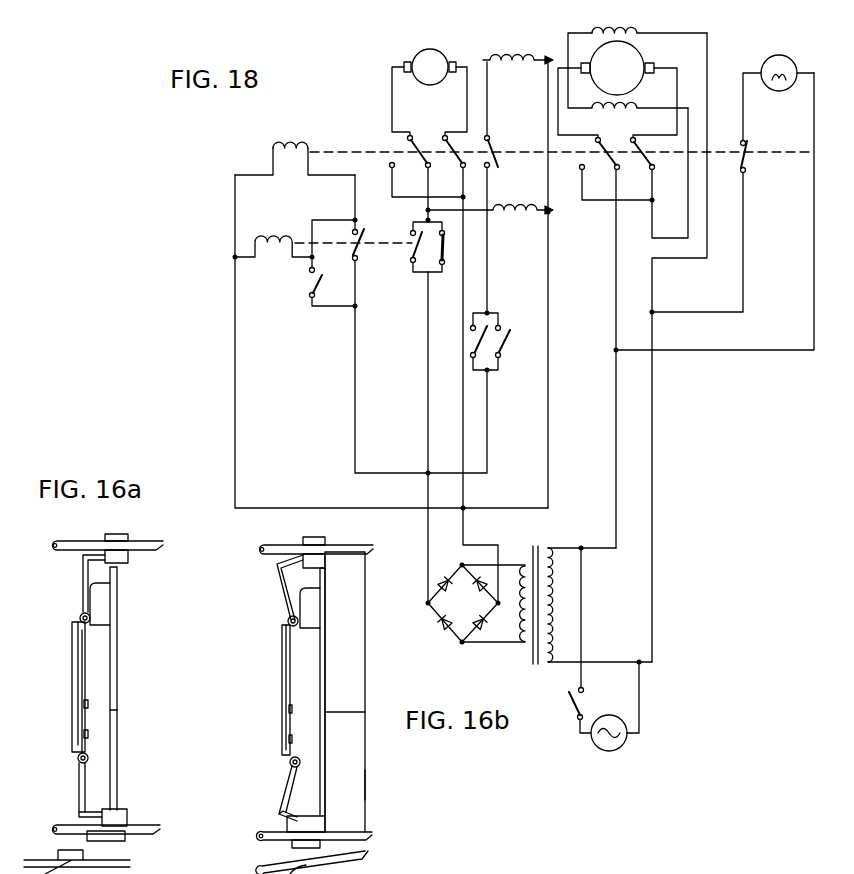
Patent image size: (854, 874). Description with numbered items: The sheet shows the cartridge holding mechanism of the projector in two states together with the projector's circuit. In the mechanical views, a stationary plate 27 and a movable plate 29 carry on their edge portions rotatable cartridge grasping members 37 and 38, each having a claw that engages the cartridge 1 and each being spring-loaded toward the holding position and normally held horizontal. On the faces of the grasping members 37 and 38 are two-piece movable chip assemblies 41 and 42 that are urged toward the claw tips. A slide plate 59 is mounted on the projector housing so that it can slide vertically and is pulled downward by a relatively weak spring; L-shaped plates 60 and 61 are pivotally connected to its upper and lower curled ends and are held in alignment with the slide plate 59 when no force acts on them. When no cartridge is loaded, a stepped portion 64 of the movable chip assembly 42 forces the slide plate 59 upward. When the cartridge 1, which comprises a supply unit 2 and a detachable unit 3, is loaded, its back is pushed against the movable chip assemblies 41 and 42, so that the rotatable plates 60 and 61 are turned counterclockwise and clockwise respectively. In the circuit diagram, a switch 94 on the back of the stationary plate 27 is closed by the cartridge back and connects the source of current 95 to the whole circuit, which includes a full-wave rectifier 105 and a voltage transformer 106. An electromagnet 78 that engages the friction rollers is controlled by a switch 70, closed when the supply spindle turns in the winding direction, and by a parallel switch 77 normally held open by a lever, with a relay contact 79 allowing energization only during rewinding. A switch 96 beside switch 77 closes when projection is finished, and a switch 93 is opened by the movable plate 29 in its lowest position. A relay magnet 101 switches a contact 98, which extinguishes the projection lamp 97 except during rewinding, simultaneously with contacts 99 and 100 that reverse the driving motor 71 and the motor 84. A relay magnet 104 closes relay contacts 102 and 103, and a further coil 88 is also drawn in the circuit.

In FIG. 18, the motor 84 is at (440, 56).
In FIG. 18, the electromagnet 78 is at (512, 58).
In FIG. 18, the driving motor 71 is at (650, 48).
In FIG. 18, the projection lamp 97 is at (778, 57).
In FIG. 18, the relay magnet 101 is at (292, 143).
In FIG. 18, the contact 100 is at (439, 152).
In FIG. 18, the relay contact 79 is at (503, 151).
In FIG. 18, the contact 99 is at (625, 154).
In FIG. 18, the contact 98 is at (747, 153).
In FIG. 18, the relay coil 88 is at (512, 203).
In FIG. 18, the relay magnet 104 is at (273, 241).
In FIG. 18, the relay contact 103 is at (338, 242).
In FIG. 18, the relay contact 102 is at (413, 234).
In FIG. 18, the switch 93 is at (447, 242).
In FIG. 18, the switch 96 is at (316, 276).
In FIG. 18, the switch 77 is at (487, 318).
In FIG. 18, the switch 70 is at (502, 355).
In FIG. 18, the full-wave rectifier 105 is at (447, 628).
In FIG. 18, the voltage transformer 106 is at (540, 548).
In FIG. 18, the switch 94 is at (588, 700).
In FIG. 16A, the switch 94 is at (75, 612).
In FIG. 16B, the switch 94 is at (288, 612).
In FIG. 18, the source of current 95 is at (610, 751).
In FIG. 16A, the movable chip assembly 41 is at (108, 534).
In FIG. 16B, the movable chip assembly 41 is at (315, 538).
In FIG. 16A, the cartridge grasping member 37 is at (145, 542).
In FIG. 16B, the cartridge grasping member 37 is at (350, 544).
In FIG. 16A, the L-shaped plate 60 is at (82, 579).
In FIG. 16B, the L-shaped plate 60 is at (279, 578).
In FIG. 16A, the stationary plate 27 is at (117, 633).
In FIG. 16B, the stationary plate 27 is at (325, 588).
In FIG. 16A, the movable plate 29 is at (117, 738).
In FIG. 16B, the movable plate 29 is at (325, 750).
In FIG. 16A, the slide plate 59 is at (72, 743).
In FIG. 16B, the slide plate 59 is at (285, 740).
In FIG. 16A, the L-shaped plate 61 is at (71, 788).
In FIG. 16B, the L-shaped plate 61 is at (292, 792).
In FIG. 16A, the stepped portion 64 is at (76, 817).
In FIG. 16B, the stepped portion 64 is at (282, 812).
In FIG. 16A, the movable chip assembly 42 is at (127, 810).
In FIG. 16B, the movable chip assembly 42 is at (288, 827).
In FIG. 16A, the cartridge grasping member 38 is at (143, 825).
In FIG. 16B, the cartridge grasping member 38 is at (373, 818).
In FIG. 16B, the cartridge 1 is at (353, 665).
In FIG. 16B, the supply unit 2 is at (353, 698).
In FIG. 16B, the detachable unit 3 is at (365, 790).